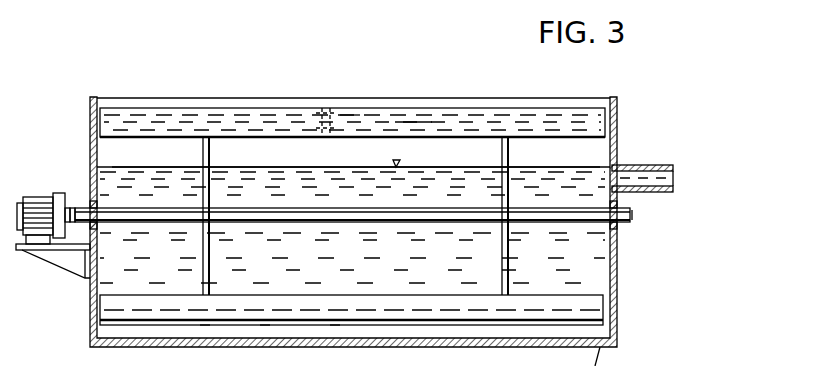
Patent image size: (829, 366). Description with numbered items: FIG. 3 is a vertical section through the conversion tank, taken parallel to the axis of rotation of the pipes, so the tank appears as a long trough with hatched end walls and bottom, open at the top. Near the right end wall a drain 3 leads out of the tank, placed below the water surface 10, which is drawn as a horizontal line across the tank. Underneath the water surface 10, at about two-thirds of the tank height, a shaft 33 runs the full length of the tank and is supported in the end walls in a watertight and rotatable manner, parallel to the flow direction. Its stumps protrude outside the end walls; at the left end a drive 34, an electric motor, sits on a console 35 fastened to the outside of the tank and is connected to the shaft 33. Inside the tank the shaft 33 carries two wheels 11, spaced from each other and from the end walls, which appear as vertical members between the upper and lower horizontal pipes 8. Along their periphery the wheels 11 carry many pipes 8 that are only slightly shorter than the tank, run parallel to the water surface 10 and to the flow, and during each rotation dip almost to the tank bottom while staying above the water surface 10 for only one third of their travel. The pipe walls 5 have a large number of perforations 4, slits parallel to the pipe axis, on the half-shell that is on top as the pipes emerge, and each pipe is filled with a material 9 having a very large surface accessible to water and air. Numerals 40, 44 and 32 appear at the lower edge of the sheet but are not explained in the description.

The drain 3 is at (643, 168).
The perforations 4 is at (415, 128).
The walls 5 is at (350, 110).
The pipes 8 is at (268, 112).
The material 9 is at (322, 108).
The water surface 10 is at (400, 163).
The wheels 11 is at (205, 150).
The shaft 33 is at (628, 226).
The drive 34 is at (36, 200).
The console 35 is at (38, 252).
The lower element 40 is at (206, 345).
The lower element 44 is at (266, 345).
The lower element 32 is at (336, 345).